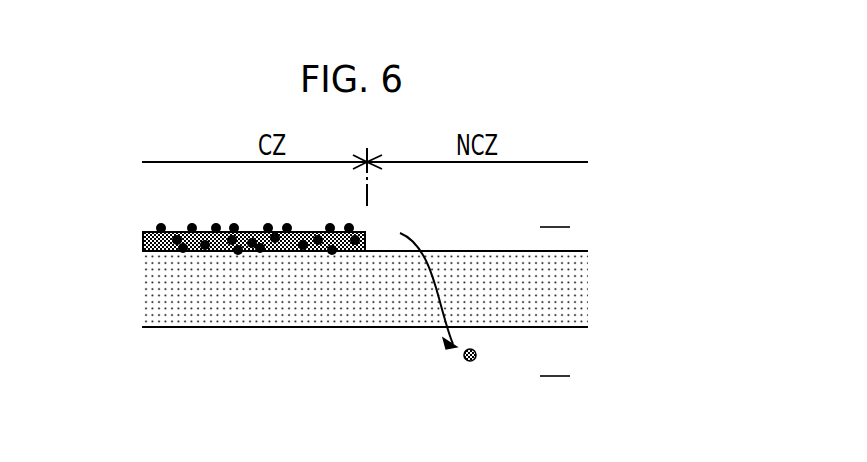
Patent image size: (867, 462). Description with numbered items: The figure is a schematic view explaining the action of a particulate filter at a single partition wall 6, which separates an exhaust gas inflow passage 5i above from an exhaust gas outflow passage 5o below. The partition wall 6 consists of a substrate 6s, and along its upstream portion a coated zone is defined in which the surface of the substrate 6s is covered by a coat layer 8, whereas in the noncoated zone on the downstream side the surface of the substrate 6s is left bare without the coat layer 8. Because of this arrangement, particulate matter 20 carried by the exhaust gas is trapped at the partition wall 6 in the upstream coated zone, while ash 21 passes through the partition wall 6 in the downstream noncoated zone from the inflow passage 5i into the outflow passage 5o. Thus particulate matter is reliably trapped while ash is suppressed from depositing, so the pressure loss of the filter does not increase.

The partition wall 6 is at (587, 278).
The substrate 6s is at (146, 287).
The coat layer 8 is at (143, 237).
The particulate matter 20 is at (297, 230).
The ash 21 is at (463, 357).
The exhaust gas inflow passage 5i is at (555, 212).
The exhaust gas outflow passage 5o is at (558, 362).